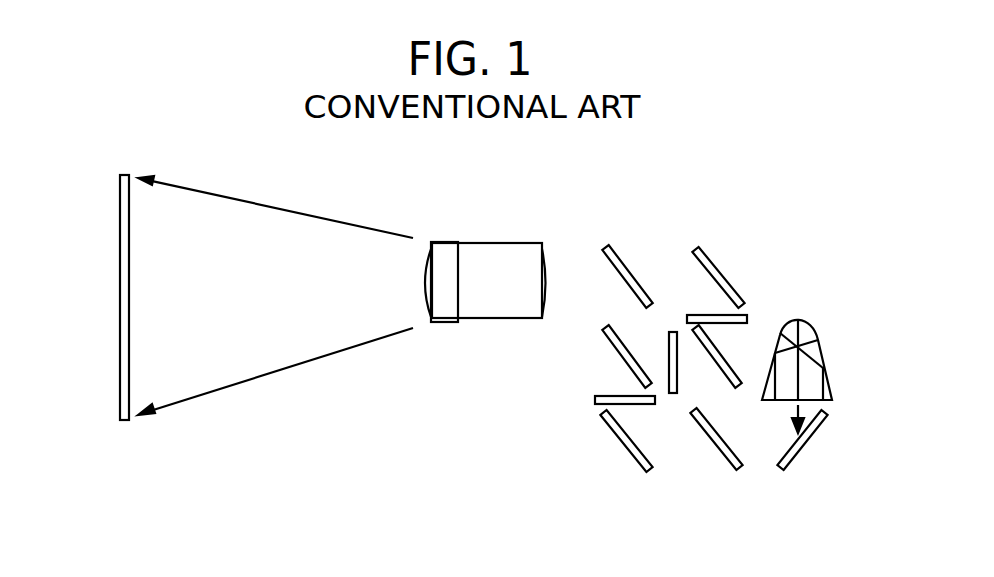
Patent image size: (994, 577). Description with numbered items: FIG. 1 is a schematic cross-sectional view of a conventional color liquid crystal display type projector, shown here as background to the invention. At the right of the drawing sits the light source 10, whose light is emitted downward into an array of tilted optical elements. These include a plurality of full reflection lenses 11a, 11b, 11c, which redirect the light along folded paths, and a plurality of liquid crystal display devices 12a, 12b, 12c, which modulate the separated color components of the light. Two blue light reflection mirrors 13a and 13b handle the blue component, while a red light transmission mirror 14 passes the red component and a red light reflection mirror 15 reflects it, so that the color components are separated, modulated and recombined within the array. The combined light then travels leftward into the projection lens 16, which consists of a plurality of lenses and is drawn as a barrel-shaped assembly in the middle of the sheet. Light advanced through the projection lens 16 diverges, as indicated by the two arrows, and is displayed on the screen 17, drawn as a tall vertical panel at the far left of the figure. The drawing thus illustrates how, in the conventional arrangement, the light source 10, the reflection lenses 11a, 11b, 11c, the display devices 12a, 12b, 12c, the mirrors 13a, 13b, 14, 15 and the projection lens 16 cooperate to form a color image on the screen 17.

The light source 10 is at (819, 345).
The full reflection lens 11a is at (830, 423).
The full reflection lens 11b is at (722, 275).
The full reflection lens 11c is at (620, 440).
The liquid crystal display device 12a is at (749, 314).
The liquid crystal display device 12b is at (672, 395).
The liquid crystal display device 12c is at (595, 398).
The blue light reflection mirror 13a is at (734, 364).
The blue light reflection mirror 13b is at (615, 340).
The red light transmission mirror 14 is at (728, 462).
The red light reflection mirror 15 is at (636, 277).
The projection lens 16 is at (505, 243).
The screen 17 is at (118, 328).